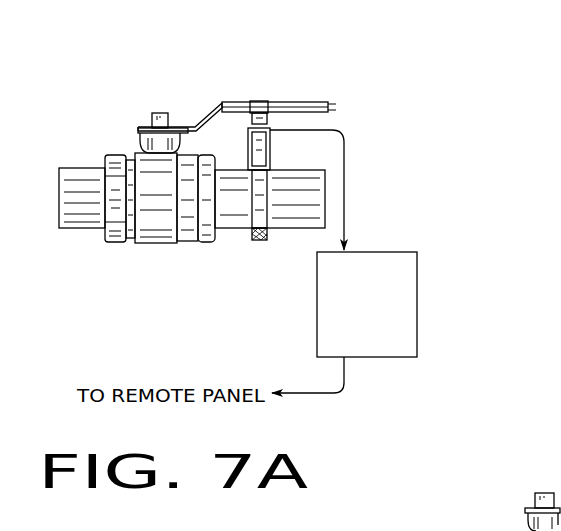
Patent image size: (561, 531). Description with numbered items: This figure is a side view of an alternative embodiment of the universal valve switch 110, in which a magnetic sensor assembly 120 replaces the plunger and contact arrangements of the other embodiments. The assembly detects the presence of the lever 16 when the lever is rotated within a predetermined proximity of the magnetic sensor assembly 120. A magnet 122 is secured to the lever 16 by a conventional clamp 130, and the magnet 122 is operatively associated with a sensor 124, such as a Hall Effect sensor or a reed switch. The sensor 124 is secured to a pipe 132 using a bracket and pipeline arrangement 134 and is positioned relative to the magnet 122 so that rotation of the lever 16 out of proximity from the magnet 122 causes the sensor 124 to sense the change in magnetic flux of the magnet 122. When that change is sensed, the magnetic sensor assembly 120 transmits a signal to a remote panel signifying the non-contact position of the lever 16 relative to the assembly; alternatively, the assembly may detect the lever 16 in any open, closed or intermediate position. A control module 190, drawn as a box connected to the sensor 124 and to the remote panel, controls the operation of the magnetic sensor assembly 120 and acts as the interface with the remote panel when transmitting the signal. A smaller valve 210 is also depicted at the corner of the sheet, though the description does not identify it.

The lever 16 is at (345, 101).
The universal valve switch 110 is at (432, 107).
The magnetic sensor assembly 120 is at (372, 188).
The magnet 122 is at (245, 107).
The sensor 124 is at (270, 139).
The clamp 130 is at (258, 103).
The pipe 132 is at (294, 208).
The bracket and pipeline arrangement 134 is at (215, 170).
The control module 190 is at (417, 287).
The valve 210 is at (522, 473).